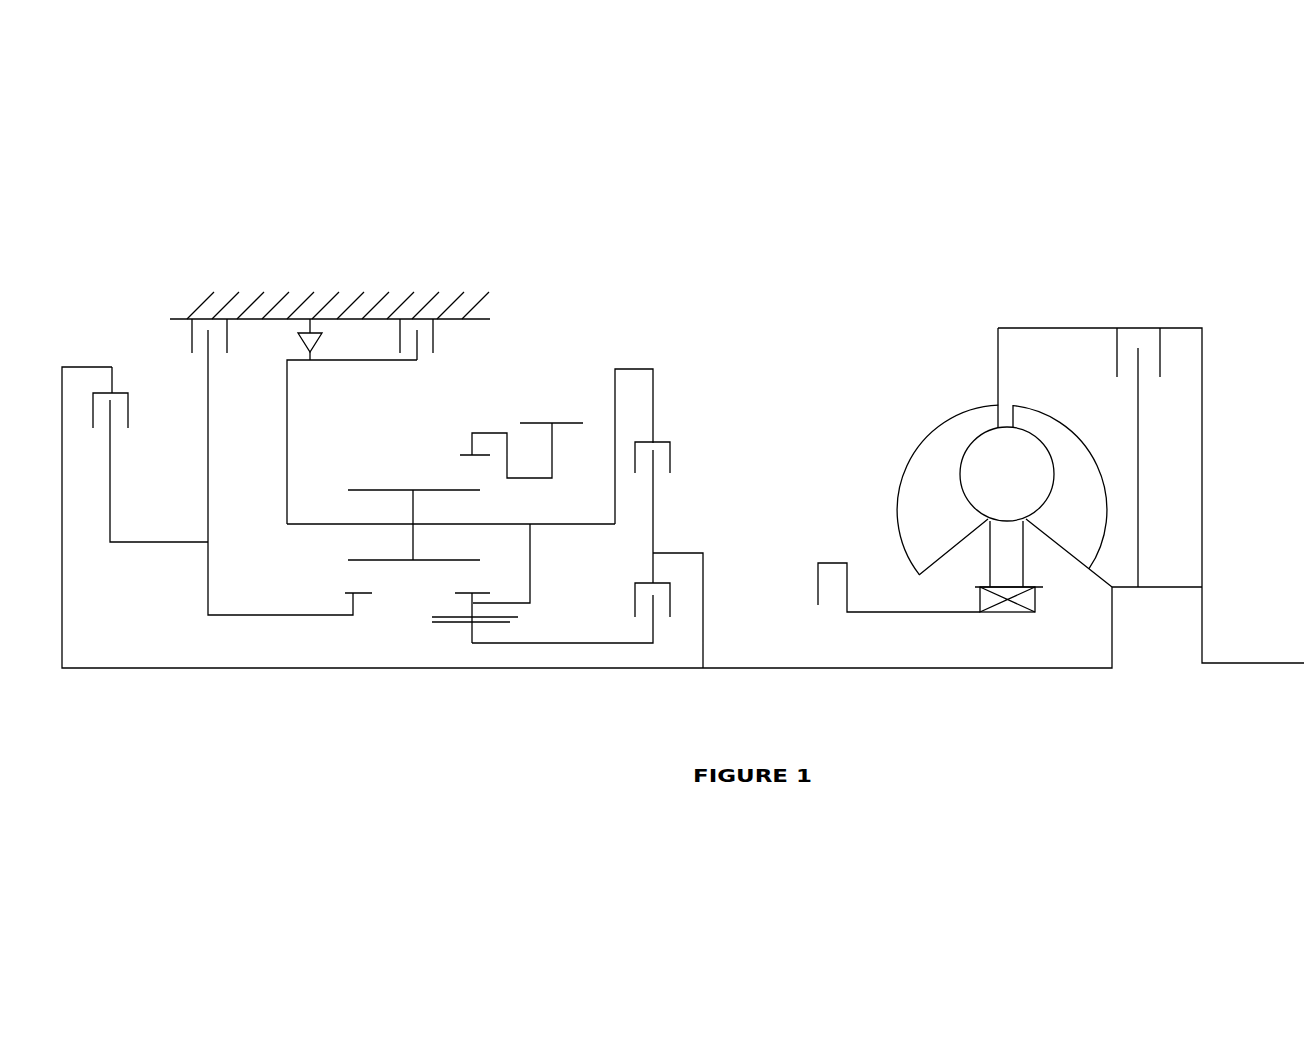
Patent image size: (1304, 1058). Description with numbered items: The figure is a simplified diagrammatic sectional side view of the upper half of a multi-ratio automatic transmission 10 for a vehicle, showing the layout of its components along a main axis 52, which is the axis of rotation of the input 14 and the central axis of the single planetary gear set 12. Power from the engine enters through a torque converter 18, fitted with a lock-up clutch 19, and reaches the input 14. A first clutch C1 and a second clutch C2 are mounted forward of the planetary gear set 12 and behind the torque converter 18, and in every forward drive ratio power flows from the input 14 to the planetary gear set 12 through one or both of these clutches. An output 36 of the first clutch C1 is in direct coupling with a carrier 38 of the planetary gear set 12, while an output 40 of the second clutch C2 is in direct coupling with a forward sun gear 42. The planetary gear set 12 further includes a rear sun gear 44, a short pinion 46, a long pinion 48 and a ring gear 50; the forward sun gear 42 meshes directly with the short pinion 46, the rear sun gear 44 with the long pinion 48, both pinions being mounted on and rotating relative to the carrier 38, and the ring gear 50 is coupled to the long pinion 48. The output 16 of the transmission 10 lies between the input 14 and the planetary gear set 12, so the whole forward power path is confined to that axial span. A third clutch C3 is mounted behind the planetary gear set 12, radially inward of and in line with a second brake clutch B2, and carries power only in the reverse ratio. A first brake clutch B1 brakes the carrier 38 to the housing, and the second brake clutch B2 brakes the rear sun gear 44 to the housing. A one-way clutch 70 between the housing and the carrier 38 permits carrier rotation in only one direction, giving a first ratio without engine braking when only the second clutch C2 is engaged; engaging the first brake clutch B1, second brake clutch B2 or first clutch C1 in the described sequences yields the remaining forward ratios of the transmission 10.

The multi-ratio automatic transmission 10 is at (735, 337).
The planetary gear set 12 is at (382, 647).
The input 14 is at (933, 675).
The output 16 is at (530, 420).
The torque converter 18 is at (935, 428).
The lock-up clutch 19 is at (1130, 340).
The output of the first clutch 36 is at (628, 367).
The carrier 38 is at (532, 570).
The output of the second clutch 40 is at (647, 627).
The forward sun gear 42 is at (493, 623).
The rear sun gear 44 is at (342, 595).
The short pinion 46 is at (517, 617).
The long pinion 48 is at (400, 488).
The ring gear 50 is at (460, 453).
The main axis 52 is at (235, 658).
The one-way clutch 70 is at (313, 337).
The first brake clutch B1 is at (410, 320).
The second brake clutch B2 is at (193, 319).
The first clutch C1 is at (672, 445).
The second clutch C2 is at (672, 593).
The third clutch C3 is at (118, 383).